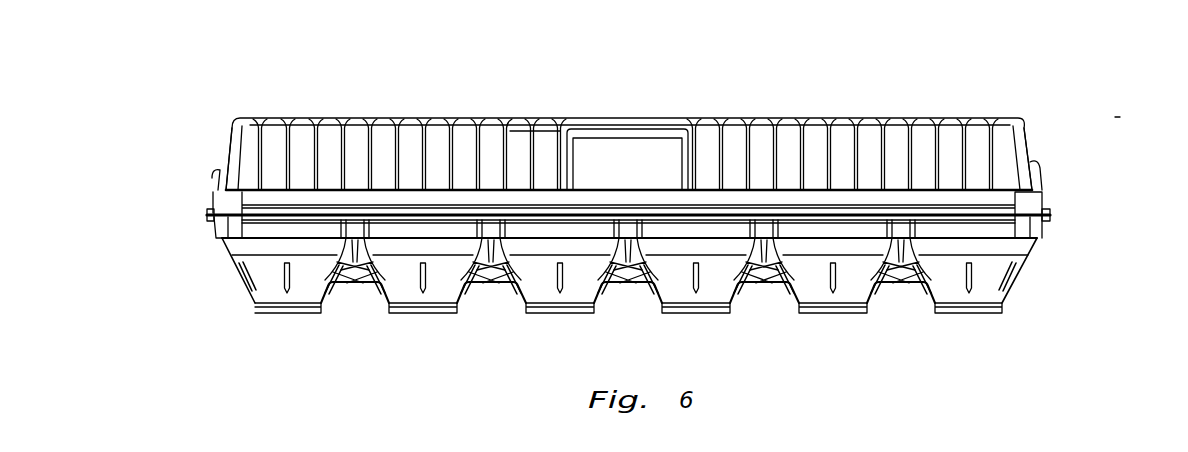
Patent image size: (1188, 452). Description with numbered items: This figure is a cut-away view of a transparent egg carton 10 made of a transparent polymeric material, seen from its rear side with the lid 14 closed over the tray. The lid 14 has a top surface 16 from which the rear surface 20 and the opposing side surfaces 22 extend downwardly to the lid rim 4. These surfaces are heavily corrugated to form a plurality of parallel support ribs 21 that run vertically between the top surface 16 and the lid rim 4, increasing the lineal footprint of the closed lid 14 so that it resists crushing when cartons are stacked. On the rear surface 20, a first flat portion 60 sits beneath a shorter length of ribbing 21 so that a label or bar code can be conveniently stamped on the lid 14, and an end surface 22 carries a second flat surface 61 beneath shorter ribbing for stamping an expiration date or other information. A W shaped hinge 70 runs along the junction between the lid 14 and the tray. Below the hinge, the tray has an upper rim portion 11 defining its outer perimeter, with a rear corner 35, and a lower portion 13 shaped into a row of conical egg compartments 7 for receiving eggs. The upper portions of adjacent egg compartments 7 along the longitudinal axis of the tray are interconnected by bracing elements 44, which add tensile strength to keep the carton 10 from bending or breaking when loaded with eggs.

The egg carton 10 is at (913, 56).
The top surface 16 is at (737, 118).
The support ribs 21 is at (425, 118).
The side surfaces 22 is at (230, 142).
The rear surface 20 is at (558, 173).
The first flat portion 60 is at (636, 184).
The second flat surface 61 is at (1040, 180).
The lid rim 4 is at (603, 213).
The W shaped hinge 70 is at (592, 217).
The upper rim portion 11 is at (593, 224).
The rear corner 35 is at (212, 232).
The lower portion 13 is at (1115, 223).
The egg compartments 7 is at (260, 297).
The lid 14 is at (1115, 217).
The bracing elements 44 is at (357, 283).